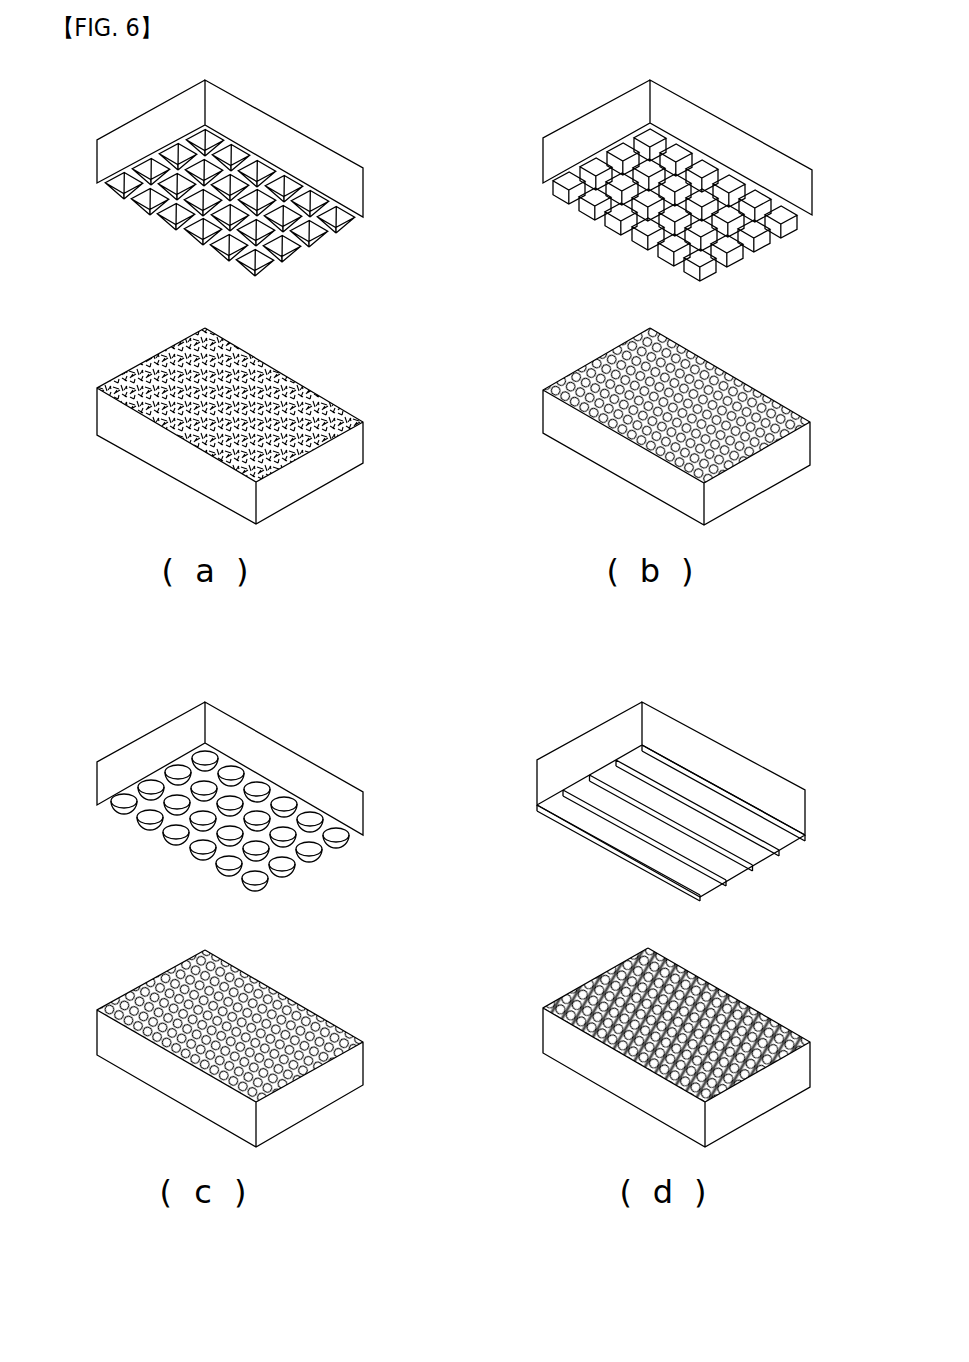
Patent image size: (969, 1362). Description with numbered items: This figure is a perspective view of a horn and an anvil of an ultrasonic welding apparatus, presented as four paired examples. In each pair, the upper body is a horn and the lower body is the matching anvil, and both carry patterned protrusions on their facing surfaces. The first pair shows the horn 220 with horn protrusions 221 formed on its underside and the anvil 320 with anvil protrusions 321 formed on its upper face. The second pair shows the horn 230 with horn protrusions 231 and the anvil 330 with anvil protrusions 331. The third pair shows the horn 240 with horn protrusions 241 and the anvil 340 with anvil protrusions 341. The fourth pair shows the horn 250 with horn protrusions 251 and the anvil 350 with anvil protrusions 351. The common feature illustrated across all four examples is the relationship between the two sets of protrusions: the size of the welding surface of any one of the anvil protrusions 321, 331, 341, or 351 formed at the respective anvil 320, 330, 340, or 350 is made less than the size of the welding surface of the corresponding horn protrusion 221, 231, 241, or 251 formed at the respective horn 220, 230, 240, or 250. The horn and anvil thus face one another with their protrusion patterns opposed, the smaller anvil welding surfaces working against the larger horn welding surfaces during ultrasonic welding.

The horn 220 is at (273, 135).
The horn protrusion 221 is at (300, 180).
The anvil 320 is at (345, 447).
The anvil protrusion 321 is at (267, 368).
The horn 230 is at (718, 135).
The horn protrusion 231 is at (745, 180).
The anvil 330 is at (790, 447).
The anvil protrusion 331 is at (713, 368).
The horn 240 is at (262, 750).
The horn protrusion 241 is at (293, 793).
The anvil 340 is at (340, 1080).
The anvil protrusion 341 is at (287, 1000).
The horn 250 is at (710, 755).
The horn protrusion 251 is at (732, 817).
The anvil 350 is at (757, 1088).
The anvil protrusion 351 is at (727, 988).